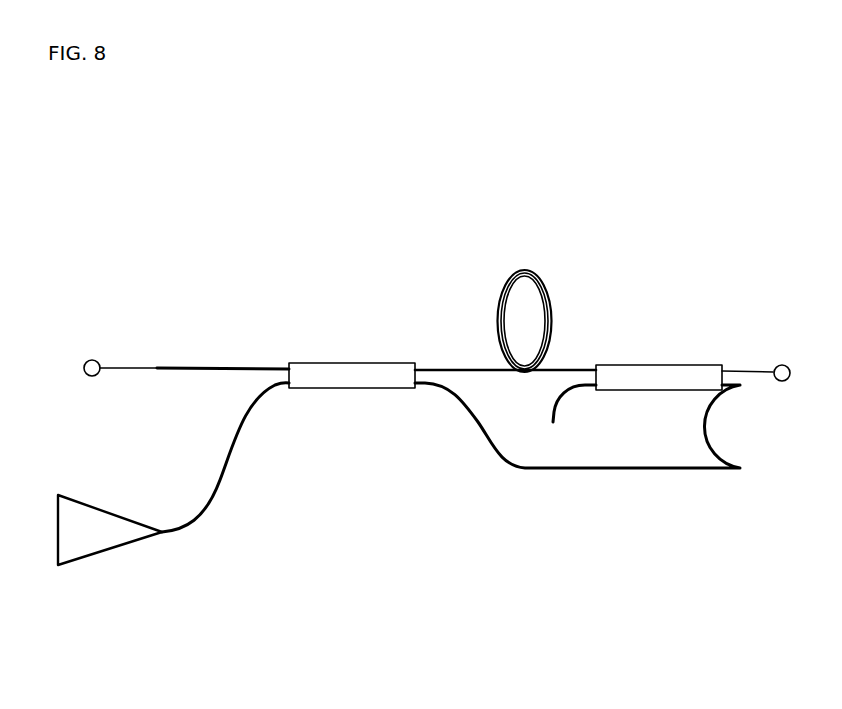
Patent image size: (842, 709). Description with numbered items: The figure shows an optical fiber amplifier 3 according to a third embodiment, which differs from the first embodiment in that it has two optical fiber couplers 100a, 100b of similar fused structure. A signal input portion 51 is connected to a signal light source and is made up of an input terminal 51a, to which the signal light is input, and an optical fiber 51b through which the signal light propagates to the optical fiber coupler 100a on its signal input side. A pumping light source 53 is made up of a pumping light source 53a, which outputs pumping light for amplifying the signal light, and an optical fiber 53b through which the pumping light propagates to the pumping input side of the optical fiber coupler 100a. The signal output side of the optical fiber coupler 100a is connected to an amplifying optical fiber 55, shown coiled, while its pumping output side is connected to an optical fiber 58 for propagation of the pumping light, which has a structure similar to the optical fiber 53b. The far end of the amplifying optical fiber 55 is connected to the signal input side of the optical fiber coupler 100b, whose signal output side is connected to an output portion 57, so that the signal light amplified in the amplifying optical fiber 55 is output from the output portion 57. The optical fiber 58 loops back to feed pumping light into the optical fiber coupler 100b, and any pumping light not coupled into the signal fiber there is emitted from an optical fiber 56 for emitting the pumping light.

The optical fiber amplifier 3 is at (547, 166).
The signal input portion 51 is at (285, 236).
The input terminal 51a is at (97, 362).
The optical fiber 51b is at (157, 367).
The pumping light source 53 is at (338, 628).
The pumping light source 53a is at (118, 537).
The optical fiber 53b is at (223, 475).
The amplifying optical fiber 55 is at (475, 368).
The optical fiber for emitting the pumping light 56 is at (558, 403).
The output portion 57 is at (778, 363).
The optical fiber for propagation of the pumping light 58 is at (645, 469).
The optical fiber coupler 100a is at (310, 378).
The optical fiber coupler 100b is at (695, 372).